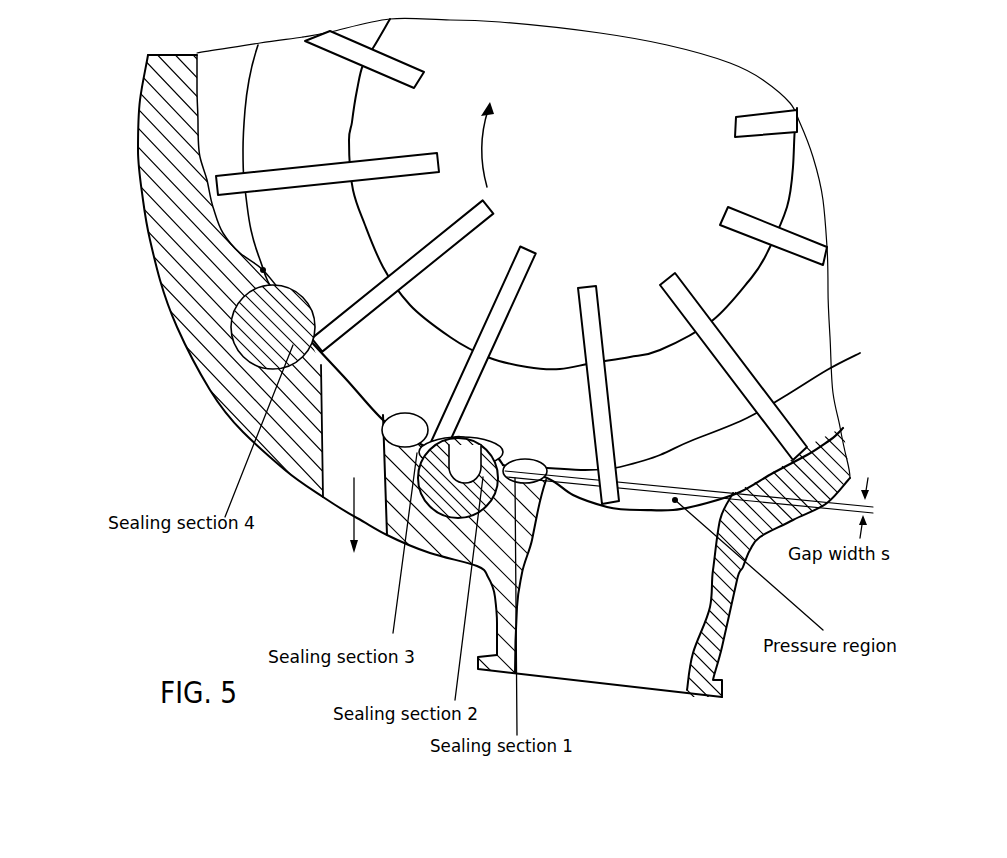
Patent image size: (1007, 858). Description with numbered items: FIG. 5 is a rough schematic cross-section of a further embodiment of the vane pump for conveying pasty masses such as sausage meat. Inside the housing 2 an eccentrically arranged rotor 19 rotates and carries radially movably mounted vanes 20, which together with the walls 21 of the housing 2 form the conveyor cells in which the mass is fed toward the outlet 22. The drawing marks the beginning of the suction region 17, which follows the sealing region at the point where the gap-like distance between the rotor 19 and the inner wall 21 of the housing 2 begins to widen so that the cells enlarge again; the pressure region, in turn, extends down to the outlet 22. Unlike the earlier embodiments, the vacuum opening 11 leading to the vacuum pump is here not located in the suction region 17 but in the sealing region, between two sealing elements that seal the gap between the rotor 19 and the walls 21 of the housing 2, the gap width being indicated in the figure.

The housing 2 is at (162, 103).
The walls of the pump housing 21 is at (198, 62).
The suction region 17 is at (263, 270).
The vacuum opening 11 is at (338, 500).
The rotor 19 is at (700, 393).
The vanes 20 is at (603, 415).
The outlet 22 is at (662, 690).